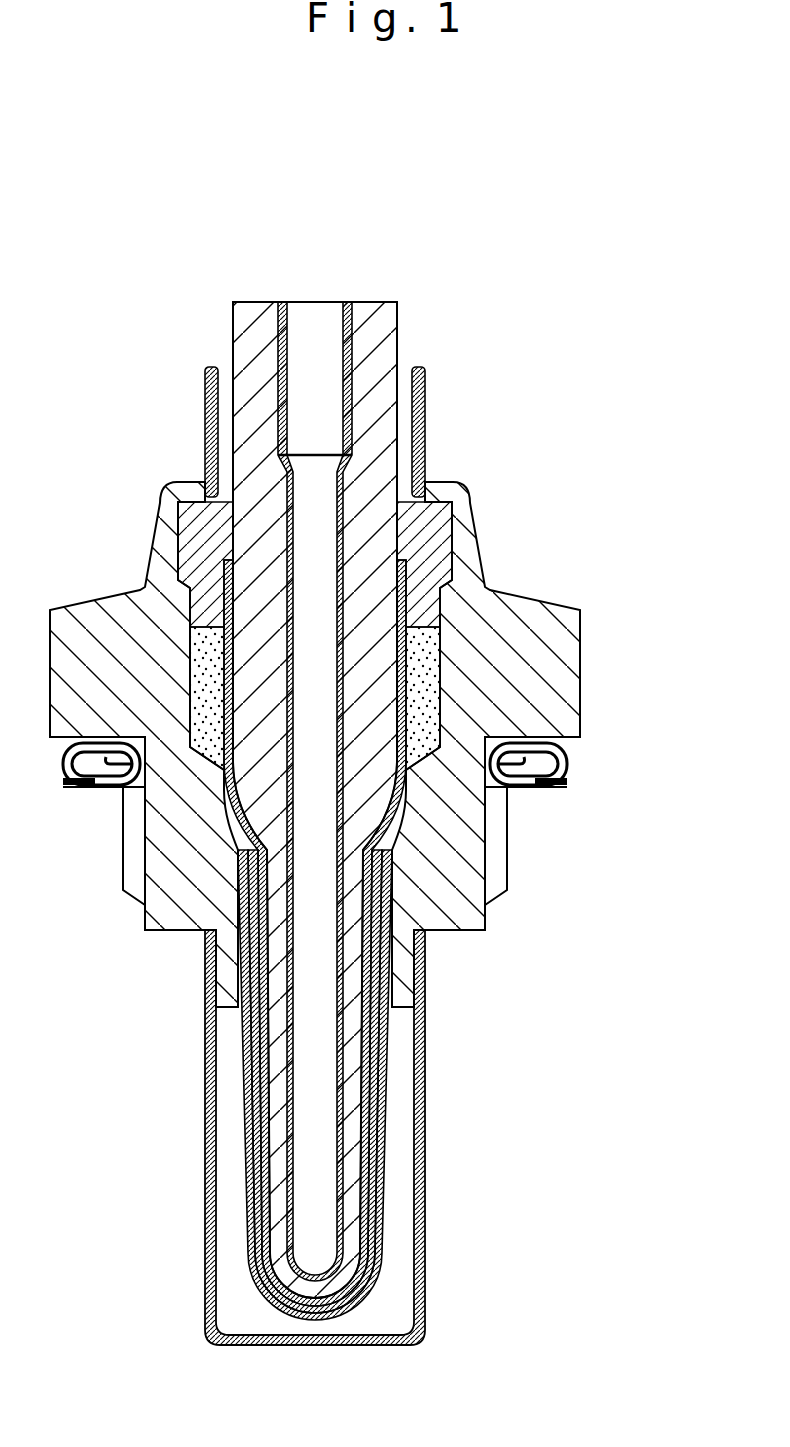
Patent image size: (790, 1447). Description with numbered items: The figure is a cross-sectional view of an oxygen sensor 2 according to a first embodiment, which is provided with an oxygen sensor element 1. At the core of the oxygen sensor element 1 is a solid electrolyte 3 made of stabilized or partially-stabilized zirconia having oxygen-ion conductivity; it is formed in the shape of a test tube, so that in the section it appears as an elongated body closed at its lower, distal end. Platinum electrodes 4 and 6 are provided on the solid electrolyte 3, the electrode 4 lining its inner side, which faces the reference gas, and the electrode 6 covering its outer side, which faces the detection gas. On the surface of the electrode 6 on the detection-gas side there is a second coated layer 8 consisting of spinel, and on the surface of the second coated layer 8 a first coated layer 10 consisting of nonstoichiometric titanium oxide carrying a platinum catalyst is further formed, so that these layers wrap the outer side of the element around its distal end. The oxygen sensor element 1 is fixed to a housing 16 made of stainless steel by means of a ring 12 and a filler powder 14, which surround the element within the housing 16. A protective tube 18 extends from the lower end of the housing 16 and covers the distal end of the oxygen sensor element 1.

The oxygen sensor element 1 is at (374, 299).
The oxygen sensor 2 is at (394, 197).
The solid electrolyte 3 is at (380, 325).
The electrode 4 is at (290, 347).
The electrode 6 is at (417, 1020).
The second coated layer 8 is at (383, 1047).
The first coated layer 10 is at (380, 1093).
The ring 12 is at (423, 523).
The filler powder 14 is at (425, 703).
The housing 16 is at (557, 637).
The protective tube 18 is at (427, 1232).